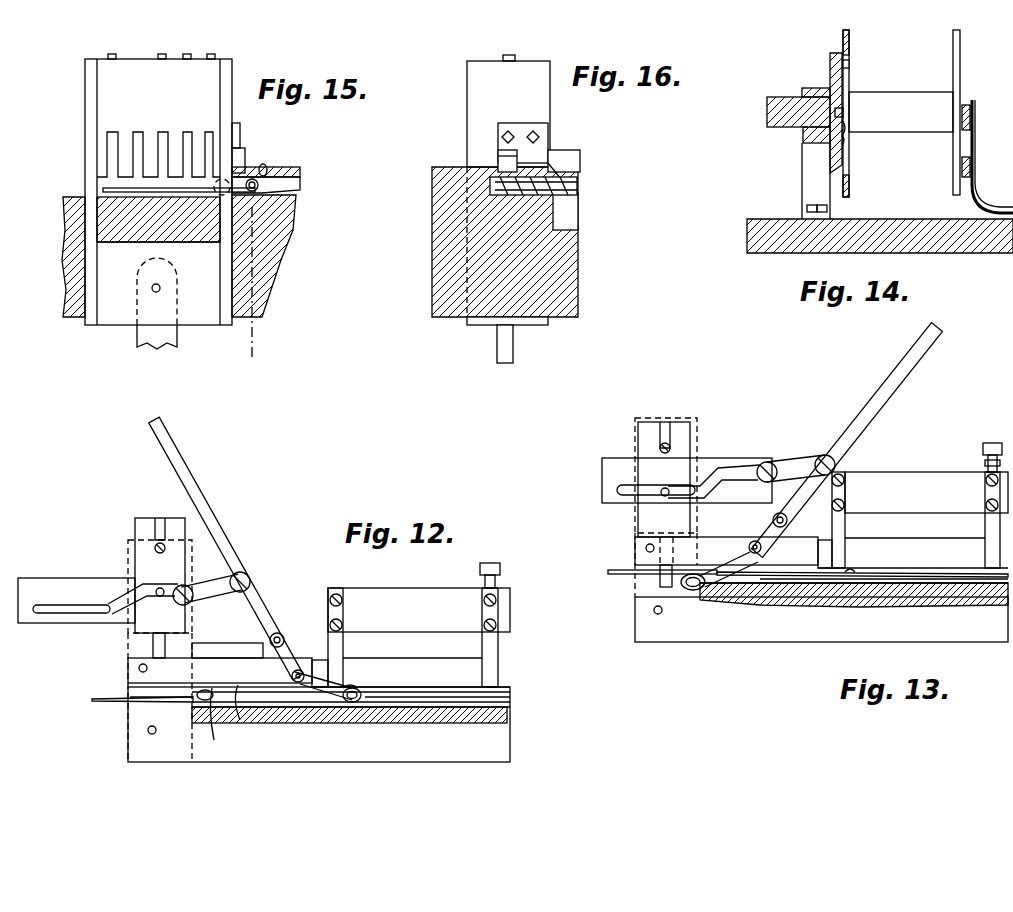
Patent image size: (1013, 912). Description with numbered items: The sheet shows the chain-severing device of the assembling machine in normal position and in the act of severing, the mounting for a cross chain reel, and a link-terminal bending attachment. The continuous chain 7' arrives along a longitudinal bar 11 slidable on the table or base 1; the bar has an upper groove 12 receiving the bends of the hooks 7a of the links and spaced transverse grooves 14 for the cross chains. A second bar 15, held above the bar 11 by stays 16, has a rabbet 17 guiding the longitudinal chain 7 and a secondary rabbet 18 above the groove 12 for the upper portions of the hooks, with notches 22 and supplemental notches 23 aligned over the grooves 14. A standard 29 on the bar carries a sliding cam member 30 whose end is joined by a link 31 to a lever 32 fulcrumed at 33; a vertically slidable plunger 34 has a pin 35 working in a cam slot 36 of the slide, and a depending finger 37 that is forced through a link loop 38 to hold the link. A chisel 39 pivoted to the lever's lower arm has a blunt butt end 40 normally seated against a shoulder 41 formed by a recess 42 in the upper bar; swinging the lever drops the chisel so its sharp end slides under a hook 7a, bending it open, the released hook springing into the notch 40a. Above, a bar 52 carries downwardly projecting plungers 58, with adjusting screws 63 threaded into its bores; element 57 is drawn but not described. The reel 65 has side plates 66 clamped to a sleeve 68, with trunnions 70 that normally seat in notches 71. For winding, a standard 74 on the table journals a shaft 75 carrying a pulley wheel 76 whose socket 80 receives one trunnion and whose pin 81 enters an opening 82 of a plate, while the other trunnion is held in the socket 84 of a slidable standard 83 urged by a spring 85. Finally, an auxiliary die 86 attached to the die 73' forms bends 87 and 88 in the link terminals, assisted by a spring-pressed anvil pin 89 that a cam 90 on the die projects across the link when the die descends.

In FIG. 14, the table or base 1 is at (935, 250).
In FIG. 13, the longitudinal chain 7 is at (862, 560).
In FIG. 12, the continuous chain 7' is at (120, 715).
In FIG. 12, the hook of longitudinal chain link 7a is at (210, 700).
In FIG. 13, the hook of longitudinal chain link 7a is at (690, 592).
In FIG. 12, the longitudinal bar 11 is at (252, 758).
In FIG. 13, the longitudinal bar 11 is at (655, 637).
In FIG. 12, the upper longitudinal groove 12 is at (505, 706).
In FIG. 13, the upper longitudinal groove 12 is at (965, 590).
In FIG. 12, the grooves or channels 14 is at (490, 714).
In FIG. 13, the grooves or channels 14 is at (830, 592).
In FIG. 12, the second longitudinal bar 15 is at (424, 668).
In FIG. 13, the second longitudinal bar 15 is at (893, 547).
In FIG. 15, the stays or members 16 is at (262, 137).
In FIG. 12, the longitudinal rabbet 17 is at (500, 699).
In FIG. 13, the longitudinal rabbet 17 is at (928, 577).
In FIG. 12, the secondary longitudinal rabbet 18 is at (434, 692).
In FIG. 13, the secondary longitudinal rabbet 18 is at (960, 578).
In FIG. 12, the notches or recesses 22 is at (351, 678).
In FIG. 12, the supplemental notches 23 is at (346, 692).
In FIG. 13, the supplemental notches 23 is at (848, 578).
In FIG. 12, the standard 29 is at (128, 661).
In FIG. 13, the standard 29 is at (635, 524).
In FIG. 12, the cam member or slide 30 is at (72, 585).
In FIG. 13, the cam member or slide 30 is at (612, 463).
In FIG. 12, the link 31 is at (215, 578).
In FIG. 13, the link 31 is at (793, 460).
In FIG. 12, the lever 32 is at (258, 601).
In FIG. 13, the lever 32 is at (878, 398).
In FIG. 12, the fulcrum 33 is at (263, 649).
In FIG. 13, the fulcrum 33 is at (773, 520).
In FIG. 12, the vertically slidable plunger 34 is at (135, 546).
In FIG. 13, the vertically slidable plunger 34 is at (648, 432).
In FIG. 12, the lug or pin 35 is at (165, 590).
In FIG. 13, the lug or pin 35 is at (669, 489).
In FIG. 12, the cam slot 36 is at (100, 613).
In FIG. 13, the cam slot 36 is at (618, 490).
In FIG. 12, the depending finger 37 is at (170, 650).
In FIG. 13, the depending finger 37 is at (660, 580).
In FIG. 12, the loop 38 is at (150, 700).
In FIG. 13, the loop 38 is at (640, 570).
In FIG. 12, the chisel or wedge 39 is at (312, 665).
In FIG. 13, the chisel or wedge 39 is at (748, 553).
In FIG. 12, the butt end 40 is at (338, 704).
In FIG. 13, the butt end 40 is at (835, 548).
In FIG. 12, the notch or shoulder 40a is at (240, 690).
In FIG. 13, the notch or shoulder 40a is at (705, 590).
In FIG. 12, the shoulder 41 is at (318, 667).
In FIG. 13, the shoulder 41 is at (812, 548).
In FIG. 12, the recess 42 is at (212, 700).
In FIG. 13, the recess 42 is at (735, 545).
In FIG. 12, the bar 52 is at (400, 600).
In FIG. 13, the housing 57 is at (920, 478).
In FIG. 12, the plungers 58 is at (497, 648).
In FIG. 12, the adjusting screws 63 is at (498, 570).
In FIG. 13, the adjusting screws 63 is at (990, 443).
In FIG. 14, the reel 65 is at (852, 33).
In FIG. 14, the side plates or strips 66 is at (962, 80).
In FIG. 14, the sleeve 68 is at (897, 97).
In FIG. 14, the trunnions 70 is at (848, 110).
In FIG. 12, the notches 71 is at (456, 694).
In FIG. 15, the die 73' is at (178, 189).
In FIG. 16, the die 73' is at (505, 195).
In FIG. 14, the standard 74 is at (805, 183).
In FIG. 14, the shaft or spindle 75 is at (822, 100).
In FIG. 14, the pulley wheel 76 is at (830, 143).
In FIG. 14, the central socket 80 is at (845, 130).
In FIG. 14, the lug or pin 81 is at (851, 66).
In FIG. 14, the openings 82 is at (851, 50).
In FIG. 14, the slidably mounted standard 83 is at (972, 207).
In FIG. 14, the aperture or socket 84 is at (965, 105).
In FIG. 14, the spring 85 is at (974, 185).
In FIG. 15, the supplemental or auxiliary die 86 is at (250, 158).
In FIG. 16, the supplemental or auxiliary die 86 is at (503, 156).
In FIG. 15, the bend 87 is at (266, 170).
In FIG. 16, the bend 87 is at (495, 183).
In FIG. 15, the bend 88 is at (256, 189).
In FIG. 15, the spring-pressed anvil pin 89 is at (298, 181).
In FIG. 16, the spring-pressed anvil pin 89 is at (530, 185).
In FIG. 16, the cam 90 is at (566, 163).